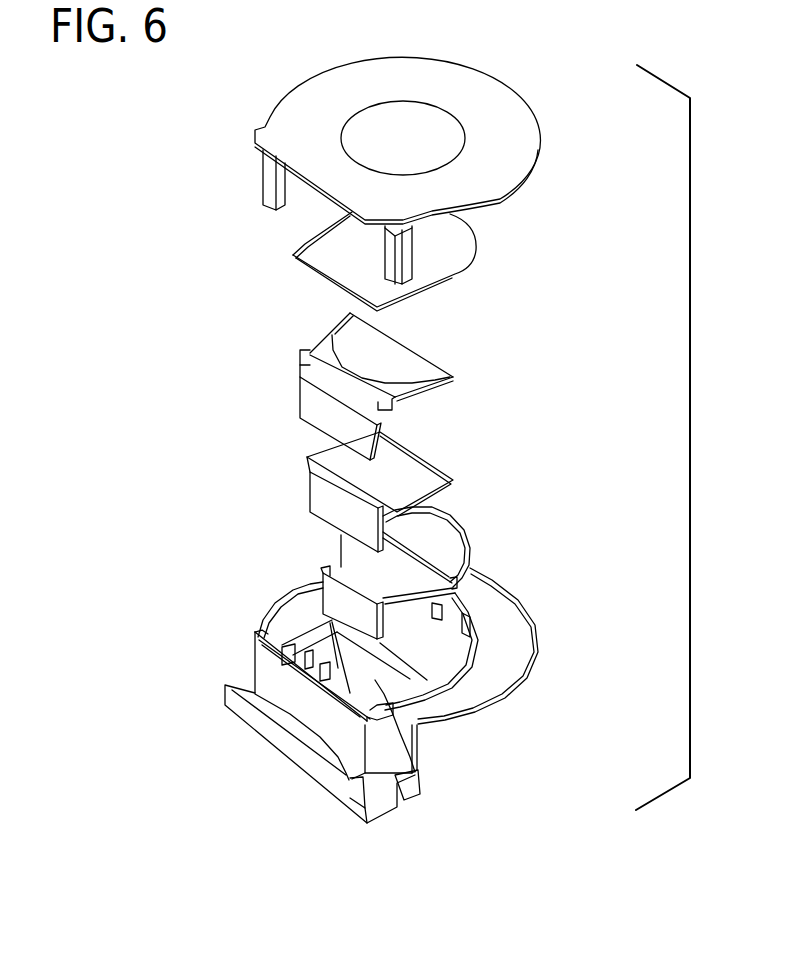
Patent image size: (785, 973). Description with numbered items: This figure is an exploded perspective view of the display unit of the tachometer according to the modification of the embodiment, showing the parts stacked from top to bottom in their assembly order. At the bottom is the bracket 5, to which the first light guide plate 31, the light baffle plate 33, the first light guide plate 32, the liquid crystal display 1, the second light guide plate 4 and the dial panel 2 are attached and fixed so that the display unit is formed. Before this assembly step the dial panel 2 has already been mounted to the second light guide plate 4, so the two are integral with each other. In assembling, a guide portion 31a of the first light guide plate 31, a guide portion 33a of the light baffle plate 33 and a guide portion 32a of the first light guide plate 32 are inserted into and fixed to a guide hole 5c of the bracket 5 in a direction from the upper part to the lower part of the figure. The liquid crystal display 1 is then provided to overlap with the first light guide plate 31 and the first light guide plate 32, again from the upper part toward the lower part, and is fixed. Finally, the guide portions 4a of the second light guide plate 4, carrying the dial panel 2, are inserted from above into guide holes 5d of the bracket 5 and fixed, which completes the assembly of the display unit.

The liquid crystal display 1 is at (313, 232).
The dial panel 2 is at (303, 85).
The second light guide plate 4 is at (255, 158).
The guide portions 4a is at (267, 193).
The bracket 5 is at (250, 660).
The guide hole 5c is at (454, 668).
The guide holes 5d is at (417, 750).
The first light guide plate 31 is at (338, 553).
The guide portion 31a is at (303, 602).
The first light guide plate 32 is at (328, 332).
The guide portion 32a is at (300, 402).
The light baffle plate 33 is at (305, 453).
The guide portion 33a is at (310, 490).